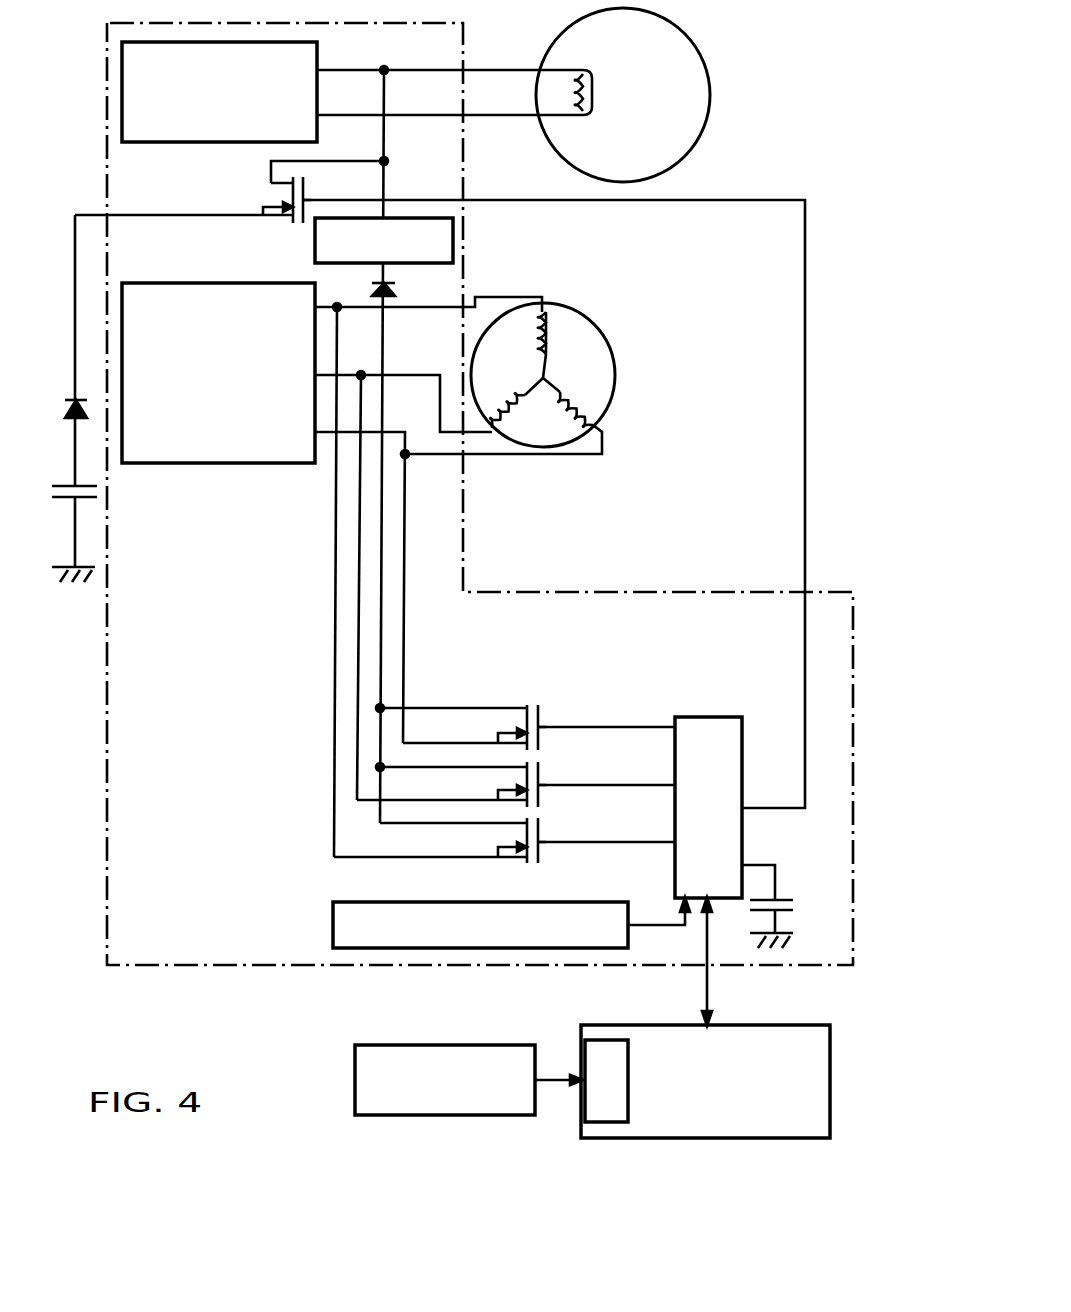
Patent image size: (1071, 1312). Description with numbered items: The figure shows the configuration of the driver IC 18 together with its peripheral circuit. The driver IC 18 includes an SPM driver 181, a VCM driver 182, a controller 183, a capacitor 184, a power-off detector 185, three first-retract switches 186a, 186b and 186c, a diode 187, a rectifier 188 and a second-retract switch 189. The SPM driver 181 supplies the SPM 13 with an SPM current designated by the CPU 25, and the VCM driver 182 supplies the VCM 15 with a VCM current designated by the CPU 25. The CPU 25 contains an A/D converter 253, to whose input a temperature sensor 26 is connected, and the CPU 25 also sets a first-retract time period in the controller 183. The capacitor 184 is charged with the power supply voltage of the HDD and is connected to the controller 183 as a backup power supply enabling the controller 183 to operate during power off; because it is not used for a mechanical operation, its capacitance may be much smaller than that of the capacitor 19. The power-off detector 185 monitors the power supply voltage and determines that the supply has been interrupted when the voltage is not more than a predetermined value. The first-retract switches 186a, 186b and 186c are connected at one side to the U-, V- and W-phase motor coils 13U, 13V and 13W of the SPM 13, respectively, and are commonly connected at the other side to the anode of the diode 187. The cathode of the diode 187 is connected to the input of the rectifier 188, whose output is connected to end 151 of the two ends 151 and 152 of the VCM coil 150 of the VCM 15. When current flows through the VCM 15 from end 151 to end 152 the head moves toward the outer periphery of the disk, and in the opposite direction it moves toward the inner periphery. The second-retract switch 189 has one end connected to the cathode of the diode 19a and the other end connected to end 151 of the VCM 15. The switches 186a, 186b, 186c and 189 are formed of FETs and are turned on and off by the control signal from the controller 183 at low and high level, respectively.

The driver IC 18 is at (195, 966).
The VCM driver 182 is at (160, 143).
The SPM driver 181 is at (212, 465).
The 2nd-retract switch 189 is at (270, 190).
The rectifier 188 is at (453, 240).
The diode 187 is at (396, 288).
The end of VCM coil 151 is at (506, 68).
The end of VCM coil 152 is at (503, 118).
The VCM coil 150 is at (597, 90).
The VCM 15 is at (710, 66).
The SPM 13 is at (613, 357).
The U-phase motor coil 13U is at (553, 337).
The W-phase motor coil 13W is at (515, 397).
The V-phase motor coil 13V is at (562, 410).
The diode 19a is at (65, 410).
The capacitor 19 is at (63, 500).
The 1st-retract switch 186a is at (546, 712).
The 1st-retract switch 186b is at (546, 770).
The 1st-retract switch 186c is at (546, 828).
The controller 183 is at (708, 716).
The capacitor 184 is at (790, 893).
The power-off detector 185 is at (332, 918).
The temperature sensor 26 is at (447, 1044).
The CPU 25 is at (790, 1025).
The A/D converter 253 is at (605, 1040).